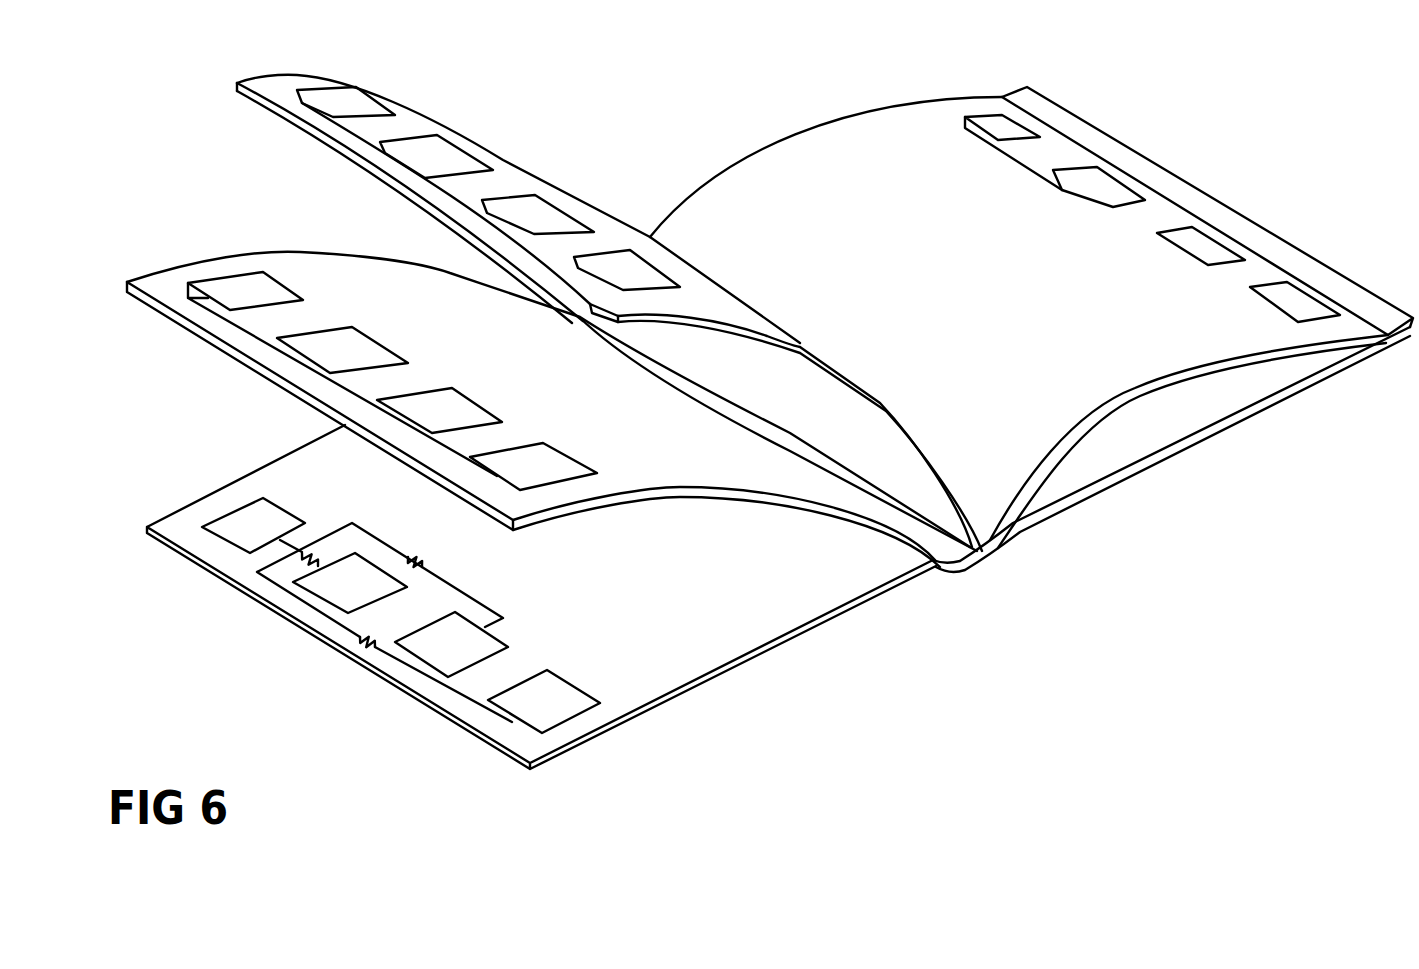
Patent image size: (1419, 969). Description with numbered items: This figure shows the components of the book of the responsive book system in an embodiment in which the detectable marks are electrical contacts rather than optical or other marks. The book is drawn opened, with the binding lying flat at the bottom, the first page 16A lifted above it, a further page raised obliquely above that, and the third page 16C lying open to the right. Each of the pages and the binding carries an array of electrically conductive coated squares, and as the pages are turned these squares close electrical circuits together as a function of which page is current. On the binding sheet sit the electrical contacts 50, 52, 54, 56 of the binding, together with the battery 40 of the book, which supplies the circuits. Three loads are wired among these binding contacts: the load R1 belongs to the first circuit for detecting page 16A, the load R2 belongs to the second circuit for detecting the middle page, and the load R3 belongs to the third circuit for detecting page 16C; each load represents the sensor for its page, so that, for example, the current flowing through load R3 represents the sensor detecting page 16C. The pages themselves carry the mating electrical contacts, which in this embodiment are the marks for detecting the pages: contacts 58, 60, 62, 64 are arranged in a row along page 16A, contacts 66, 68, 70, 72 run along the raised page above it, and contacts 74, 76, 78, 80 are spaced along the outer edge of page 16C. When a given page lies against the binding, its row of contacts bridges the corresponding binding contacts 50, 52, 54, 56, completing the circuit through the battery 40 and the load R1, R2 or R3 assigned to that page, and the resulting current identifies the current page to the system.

The page 16A is at (538, 387).
The page 16C is at (1031, 329).
The battery 40 is at (541, 597).
The electrical contact 50 is at (253, 525).
The electrical contact 52 is at (350, 583).
The electrical contact 54 is at (451, 644).
The electrical contact 56 is at (544, 701).
The load R1 is at (366, 637).
The load R2 is at (413, 556).
The load R3 is at (320, 555).
The electrical contact 58 is at (261, 287).
The electrical contact 60 is at (352, 349).
The electrical contact 62 is at (443, 404).
The electrical contact 64 is at (537, 458).
The electrical contact 66 is at (346, 104).
The electrical contact 68 is at (436, 156).
The electrical contact 70 is at (538, 214).
The electrical contact 72 is at (627, 270).
The electrical contact 74 is at (981, 123).
The electrical contact 76 is at (1099, 199).
The electrical contact 78 is at (1196, 253).
The electrical contact 80 is at (1282, 306).